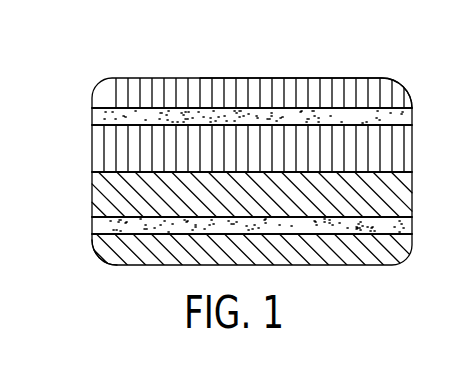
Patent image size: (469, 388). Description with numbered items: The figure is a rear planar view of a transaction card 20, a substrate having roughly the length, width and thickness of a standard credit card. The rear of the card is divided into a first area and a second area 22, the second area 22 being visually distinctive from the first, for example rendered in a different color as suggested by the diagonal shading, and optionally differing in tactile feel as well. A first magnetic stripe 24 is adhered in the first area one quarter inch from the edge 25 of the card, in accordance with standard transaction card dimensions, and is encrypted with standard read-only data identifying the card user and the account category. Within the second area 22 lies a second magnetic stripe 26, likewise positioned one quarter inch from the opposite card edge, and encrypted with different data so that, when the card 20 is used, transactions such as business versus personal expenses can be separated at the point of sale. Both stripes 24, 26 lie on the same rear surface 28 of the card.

The transaction card 20 is at (174, 57).
The second area 22 is at (98, 193).
The first magnetic stripe 24 is at (387, 115).
The edge 25 is at (298, 79).
The second magnetic stripe 26 is at (400, 225).
The surface 28 is at (100, 152).